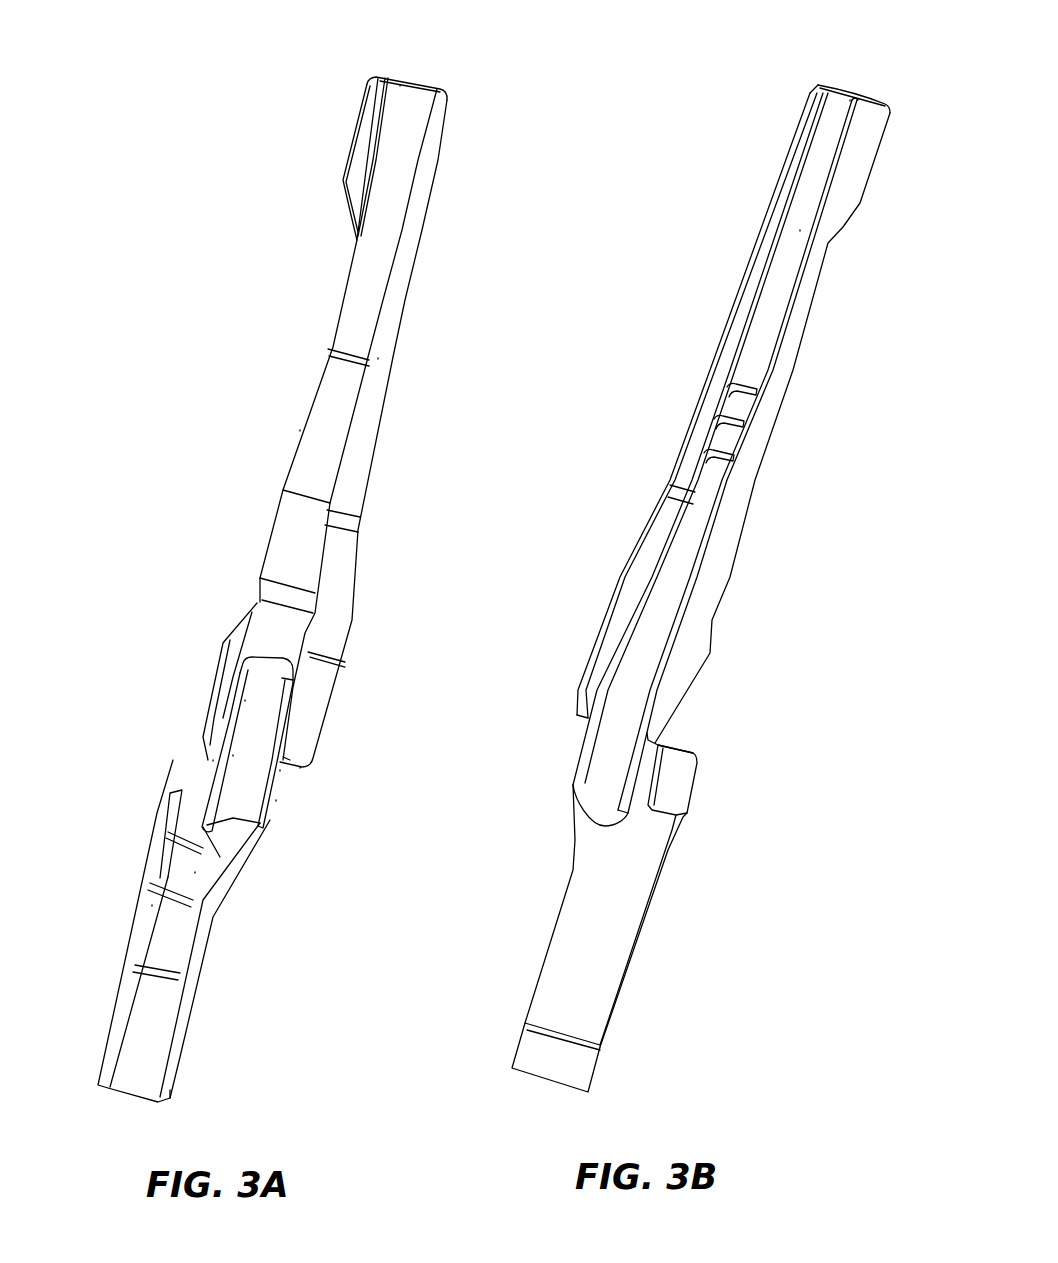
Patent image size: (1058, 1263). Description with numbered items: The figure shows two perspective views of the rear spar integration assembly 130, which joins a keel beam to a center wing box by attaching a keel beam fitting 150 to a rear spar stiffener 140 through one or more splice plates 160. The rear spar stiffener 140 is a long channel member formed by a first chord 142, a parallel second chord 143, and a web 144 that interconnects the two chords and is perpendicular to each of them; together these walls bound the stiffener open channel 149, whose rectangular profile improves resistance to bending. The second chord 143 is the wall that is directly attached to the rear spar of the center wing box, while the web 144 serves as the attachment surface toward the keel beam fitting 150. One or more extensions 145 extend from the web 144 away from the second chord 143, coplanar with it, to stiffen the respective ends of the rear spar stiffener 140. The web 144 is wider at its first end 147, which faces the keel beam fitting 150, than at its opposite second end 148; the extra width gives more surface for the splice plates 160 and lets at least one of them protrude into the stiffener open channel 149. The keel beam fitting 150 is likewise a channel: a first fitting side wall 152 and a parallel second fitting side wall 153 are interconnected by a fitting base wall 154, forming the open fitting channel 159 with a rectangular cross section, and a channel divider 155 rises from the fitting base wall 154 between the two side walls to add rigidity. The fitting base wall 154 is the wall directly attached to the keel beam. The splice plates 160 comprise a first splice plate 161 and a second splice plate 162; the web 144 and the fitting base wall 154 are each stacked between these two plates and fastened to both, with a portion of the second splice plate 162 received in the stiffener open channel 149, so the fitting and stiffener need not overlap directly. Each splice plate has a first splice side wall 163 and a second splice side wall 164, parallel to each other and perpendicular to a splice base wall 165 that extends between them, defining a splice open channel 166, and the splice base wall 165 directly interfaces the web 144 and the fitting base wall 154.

In FIG. 3A, the rear spar integration assembly 130 is at (430, 74).
In FIG. 3B, the rear spar integration assembly 130 is at (863, 84).
In FIG. 3A, the rear spar stiffener 140 is at (366, 445).
In FIG. 3B, the rear spar stiffener 140 is at (724, 542).
In FIG. 3A, the first chord 142 is at (382, 360).
In FIG. 3B, the first chord 142 is at (726, 342).
In FIG. 3B, the second chord 143 is at (762, 396).
In FIG. 3A, the web 144 is at (322, 410).
In FIG. 3B, the web 144 is at (772, 292).
In FIG. 3A, the extensions 145 is at (362, 152).
In FIG. 3A, the first end 147 is at (287, 757).
In FIG. 3B, the first end 147 is at (652, 740).
In FIG. 3A, the second end 148 is at (444, 90).
In FIG. 3B, the second end 148 is at (882, 102).
In FIG. 3B, the stiffener open channel 149 is at (793, 232).
In FIG. 3A, the keel beam fitting 150 is at (195, 972).
In FIG. 3B, the keel beam fitting 150 is at (622, 944).
In FIG. 3A, the first fitting side wall 152 is at (198, 873).
In FIG. 3A, the second fitting side wall 153 is at (170, 793).
In FIG. 3B, the second fitting side wall 153 is at (634, 968).
In FIG. 3A, the fitting base wall 154 is at (168, 835).
In FIG. 3A, the channel divider 155 is at (152, 905).
In FIG. 3A, the open fitting channel 159 is at (225, 880).
In FIG. 3A, the splice plates 160 is at (264, 676).
In FIG. 3A, the first splice plate 161 is at (250, 703).
In FIG. 3A, the second splice plate 162 is at (276, 800).
In FIG. 3B, the second splice plate 162 is at (645, 760).
In FIG. 3A, the first splice side wall 163 is at (216, 760).
In FIG. 3A, the second splice side wall 164 is at (297, 767).
In FIG. 3A, the splice base wall 165 is at (282, 775).
In FIG. 3A, the splice open channel 166 is at (236, 758).